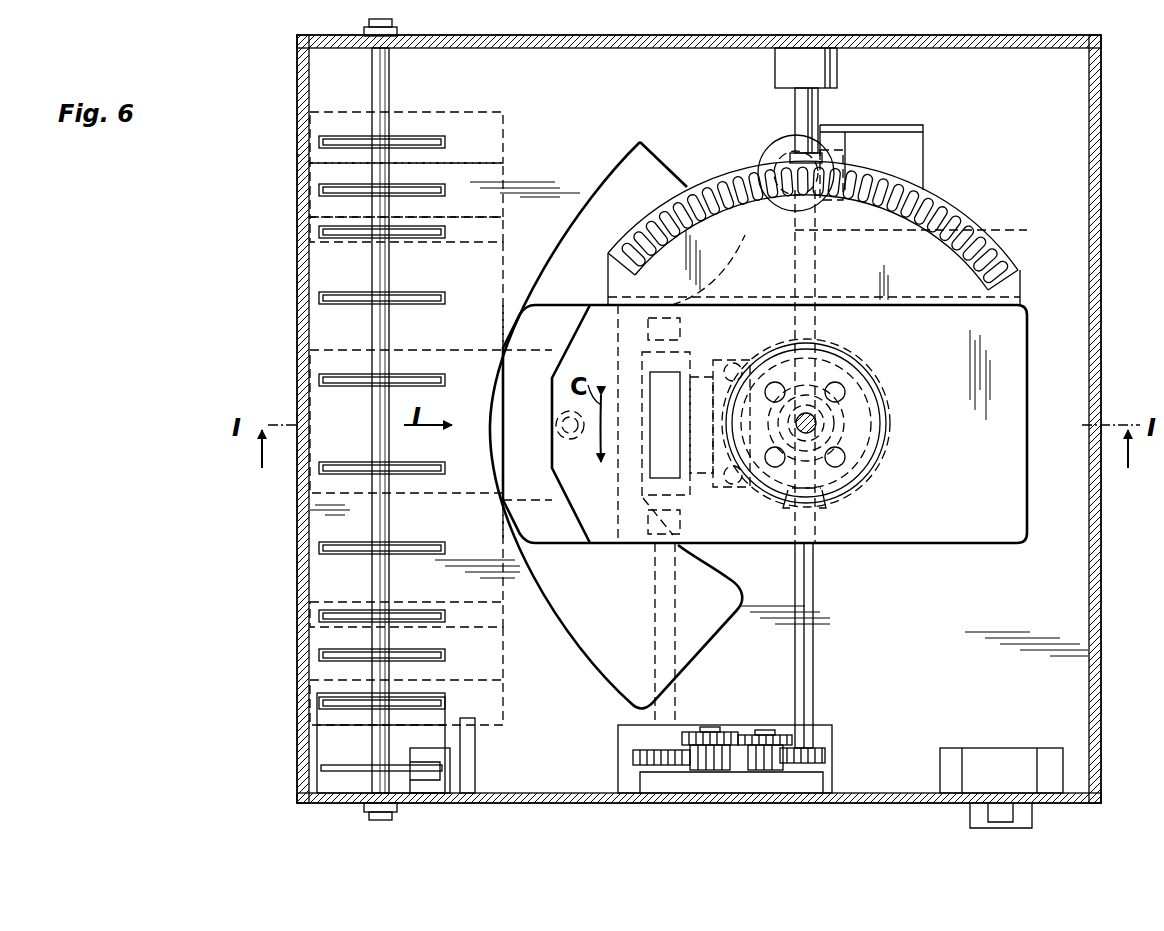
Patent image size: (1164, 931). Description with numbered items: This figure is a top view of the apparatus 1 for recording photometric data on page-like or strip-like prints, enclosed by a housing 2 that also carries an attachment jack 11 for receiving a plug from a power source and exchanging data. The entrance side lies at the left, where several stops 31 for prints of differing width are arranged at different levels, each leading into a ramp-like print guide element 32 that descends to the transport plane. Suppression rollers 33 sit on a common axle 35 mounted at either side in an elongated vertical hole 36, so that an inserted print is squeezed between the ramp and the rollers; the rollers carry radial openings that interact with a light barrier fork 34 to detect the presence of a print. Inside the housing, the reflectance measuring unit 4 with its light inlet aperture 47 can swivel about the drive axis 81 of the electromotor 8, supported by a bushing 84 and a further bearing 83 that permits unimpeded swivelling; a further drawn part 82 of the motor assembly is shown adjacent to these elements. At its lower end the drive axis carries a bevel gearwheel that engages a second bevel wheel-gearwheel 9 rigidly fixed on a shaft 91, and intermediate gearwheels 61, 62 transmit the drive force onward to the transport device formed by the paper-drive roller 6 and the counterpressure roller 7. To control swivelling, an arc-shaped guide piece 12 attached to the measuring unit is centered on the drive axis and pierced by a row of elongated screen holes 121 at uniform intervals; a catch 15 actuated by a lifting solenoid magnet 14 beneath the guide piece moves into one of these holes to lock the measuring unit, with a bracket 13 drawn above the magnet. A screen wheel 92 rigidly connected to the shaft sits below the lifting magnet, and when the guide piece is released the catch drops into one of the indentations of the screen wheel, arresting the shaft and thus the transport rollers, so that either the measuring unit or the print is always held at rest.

The apparatus 1 is at (1104, 207).
The housing 2 is at (1102, 286).
The reflectance measuring unit 4 is at (568, 300).
The paper-drive roller 6 is at (645, 366).
The counterpressure roller 7 is at (660, 470).
The electromotor 8 is at (862, 400).
The second bevel wheel-gearwheel 9 is at (824, 508).
The attachment jack 11 is at (1026, 823).
The arc-shaped guide piece 12 is at (988, 291).
The bracket 13 is at (846, 182).
The lifting solenoid magnet 14 is at (786, 165).
The catch 15 is at (792, 200).
The stop 31 is at (493, 117).
The print guide element 32 is at (300, 155).
The suppression roller 33 is at (440, 144).
The light barrier fork 34 is at (456, 762).
The axle 35 is at (390, 513).
The vertical hole 36 is at (396, 40).
The light inlet aperture 47 is at (561, 428).
The intermediate gearwheel 61 is at (712, 735).
The intermediate gearwheel 62 is at (762, 735).
The drive axis 81 is at (820, 423).
The disk rim 82 is at (872, 470).
The bearing 83 is at (838, 352).
The bushing 84 is at (845, 442).
The shaft 91 is at (800, 101).
The screen wheel 92 is at (832, 232).
The screen hole 121 is at (657, 236).